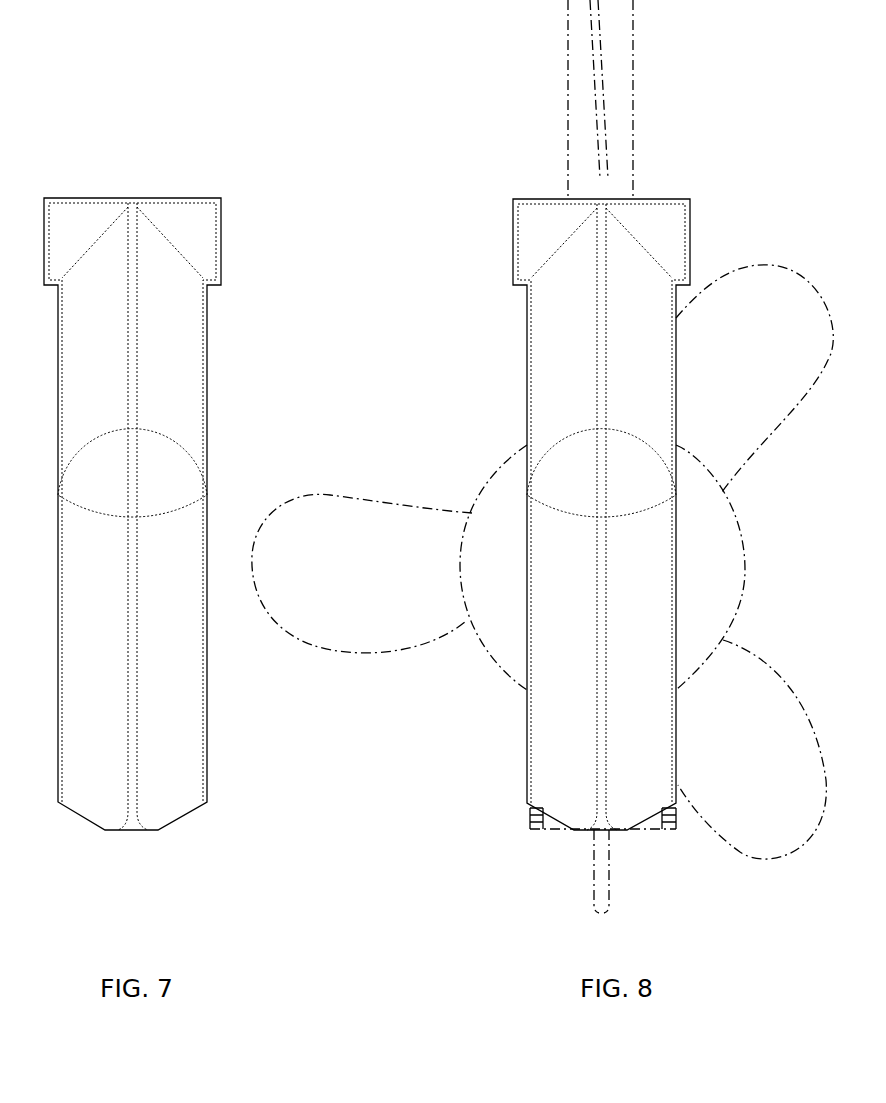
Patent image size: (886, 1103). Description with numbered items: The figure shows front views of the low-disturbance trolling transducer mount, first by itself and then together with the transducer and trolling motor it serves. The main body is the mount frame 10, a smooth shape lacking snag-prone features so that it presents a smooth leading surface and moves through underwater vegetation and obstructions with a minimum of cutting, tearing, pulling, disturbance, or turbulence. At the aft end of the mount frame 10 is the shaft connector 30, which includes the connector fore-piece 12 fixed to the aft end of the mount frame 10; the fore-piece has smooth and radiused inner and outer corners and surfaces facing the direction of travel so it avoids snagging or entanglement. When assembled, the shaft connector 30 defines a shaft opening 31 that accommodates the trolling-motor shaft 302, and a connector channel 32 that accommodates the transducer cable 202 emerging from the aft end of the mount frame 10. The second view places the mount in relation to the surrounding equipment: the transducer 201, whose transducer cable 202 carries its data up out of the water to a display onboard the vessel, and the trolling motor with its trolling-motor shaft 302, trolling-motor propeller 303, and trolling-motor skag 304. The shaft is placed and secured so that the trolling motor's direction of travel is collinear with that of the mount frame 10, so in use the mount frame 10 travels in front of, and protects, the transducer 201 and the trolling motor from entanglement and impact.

In FIG. 7, the shaft connector 30 is at (197, 180).
In FIG. 8, the shaft connector 30 is at (535, 184).
In FIG. 7, the connector fore-piece 12 is at (204, 218).
In FIG. 8, the connector fore-piece 12 is at (527, 216).
In FIG. 7, the mount frame 10 is at (188, 518).
In FIG. 8, the mount frame 10 is at (542, 508).
In FIG. 8, the shaft opening 31 is at (657, 184).
In FIG. 8, the connector channel 32 is at (640, 174).
In FIG. 8, the transducer cable 202 is at (598, 77).
In FIG. 8, the trolling-motor shaft 302 is at (620, 126).
In FIG. 8, the trolling-motor propeller 303 is at (408, 642).
In FIG. 8, the trolling-motor skag 304 is at (607, 882).
In FIG. 8, the transducer 201 is at (537, 823).